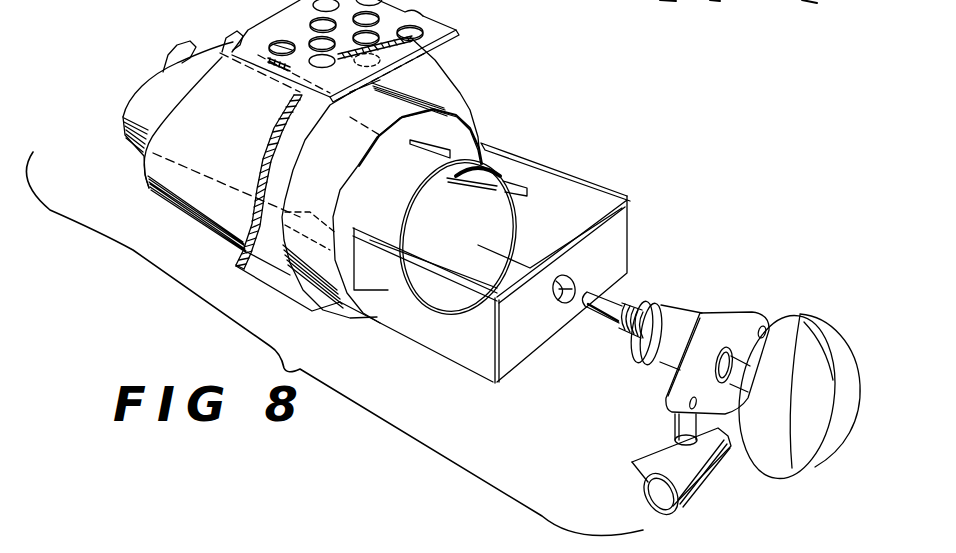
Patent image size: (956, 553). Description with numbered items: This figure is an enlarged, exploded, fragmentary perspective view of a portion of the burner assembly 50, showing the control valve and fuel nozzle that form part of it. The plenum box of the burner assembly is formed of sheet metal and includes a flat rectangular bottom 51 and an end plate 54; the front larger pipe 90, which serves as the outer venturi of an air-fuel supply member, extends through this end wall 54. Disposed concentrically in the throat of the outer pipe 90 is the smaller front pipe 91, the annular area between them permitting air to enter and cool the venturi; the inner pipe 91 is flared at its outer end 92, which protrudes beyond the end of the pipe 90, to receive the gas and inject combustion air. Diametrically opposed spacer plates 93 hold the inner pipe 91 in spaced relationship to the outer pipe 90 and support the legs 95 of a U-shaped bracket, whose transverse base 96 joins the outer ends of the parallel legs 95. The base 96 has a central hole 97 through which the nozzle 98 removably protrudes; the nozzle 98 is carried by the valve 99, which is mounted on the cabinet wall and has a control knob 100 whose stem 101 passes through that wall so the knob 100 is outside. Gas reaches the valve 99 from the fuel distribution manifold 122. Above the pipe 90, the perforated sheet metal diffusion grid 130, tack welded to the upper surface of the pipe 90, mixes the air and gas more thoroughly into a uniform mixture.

The perforated sheet metal diffusion grid 130 is at (440, 24).
The burner assembly 50 is at (474, 66).
The end plate 54 is at (458, 104).
The front larger pipe 90 is at (193, 203).
The flat rectangular bottom 51 is at (268, 275).
The smaller front pipe 91 is at (395, 226).
The outer end of the pipe 91 92 is at (413, 207).
The spacer plates 93 is at (507, 180).
The legs 95 is at (580, 180).
The transverse base 96 is at (525, 347).
The central hole 97 is at (577, 280).
The nozzle 98 is at (607, 327).
The valve 99 is at (688, 323).
The stem 101 is at (737, 367).
The control knob 100 is at (827, 330).
The fuel distribution manifold 122 is at (697, 480).